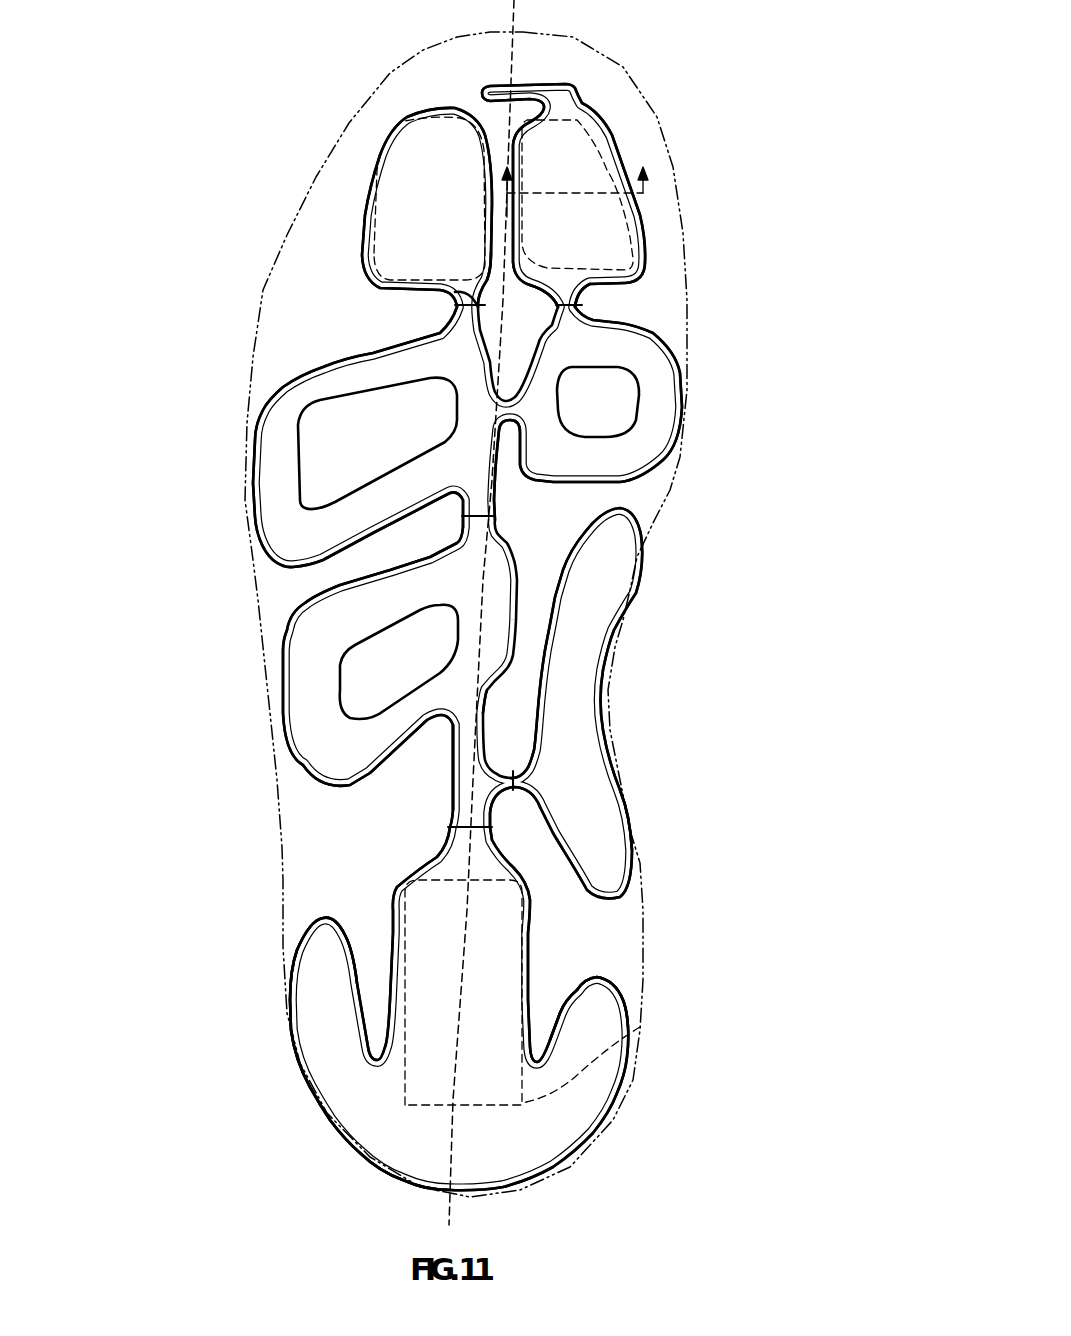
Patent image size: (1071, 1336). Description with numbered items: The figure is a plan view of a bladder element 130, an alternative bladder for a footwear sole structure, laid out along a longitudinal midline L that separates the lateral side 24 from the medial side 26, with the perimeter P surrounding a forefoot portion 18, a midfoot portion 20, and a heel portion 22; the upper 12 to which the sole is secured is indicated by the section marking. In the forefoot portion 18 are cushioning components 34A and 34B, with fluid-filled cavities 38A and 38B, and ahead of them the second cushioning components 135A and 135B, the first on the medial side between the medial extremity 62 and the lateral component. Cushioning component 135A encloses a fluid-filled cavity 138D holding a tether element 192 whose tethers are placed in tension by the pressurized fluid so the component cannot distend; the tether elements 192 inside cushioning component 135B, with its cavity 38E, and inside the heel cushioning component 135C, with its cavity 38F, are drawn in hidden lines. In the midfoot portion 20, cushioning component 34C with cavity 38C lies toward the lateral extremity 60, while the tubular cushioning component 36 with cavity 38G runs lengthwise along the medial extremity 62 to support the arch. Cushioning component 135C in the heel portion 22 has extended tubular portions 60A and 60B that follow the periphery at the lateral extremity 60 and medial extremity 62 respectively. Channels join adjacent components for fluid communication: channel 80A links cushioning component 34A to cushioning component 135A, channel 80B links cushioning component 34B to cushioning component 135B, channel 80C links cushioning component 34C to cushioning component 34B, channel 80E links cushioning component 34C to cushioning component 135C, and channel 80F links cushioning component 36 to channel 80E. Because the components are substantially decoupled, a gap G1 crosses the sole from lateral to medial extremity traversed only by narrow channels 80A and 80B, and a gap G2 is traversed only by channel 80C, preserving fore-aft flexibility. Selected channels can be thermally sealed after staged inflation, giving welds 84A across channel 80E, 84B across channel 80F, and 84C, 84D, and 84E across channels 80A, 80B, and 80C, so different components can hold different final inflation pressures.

The bladder element 130 is at (698, 40).
The longitudinal midline L is at (518, 20).
The upper 12 is at (572, 179).
The forefoot portion 18 is at (683, 168).
The midfoot portion 20 is at (617, 650).
The heel portion 22 is at (647, 967).
The lateral side 24 is at (253, 607).
The medial side 26 is at (677, 497).
The perimeter P is at (280, 863).
The gap G1 is at (608, 308).
The gap G2 is at (620, 497).
The cushioning component 34A is at (653, 352).
The cushioning component 34B is at (278, 418).
The cushioning component 34C is at (337, 638).
The tubular cushioning component 36 is at (620, 593).
The fluid-filled cavity 38A is at (653, 397).
The fluid-filled cavity 38B is at (278, 456).
The fluid-filled cavity 38C is at (320, 722).
The fluid-filled cavity 38E is at (360, 222).
The fluid-filled cavity 38F is at (553, 1128).
The fluid-filled cavity 38G is at (577, 713).
The lateral extremity 60 is at (278, 780).
The tubular portion 60A is at (310, 967).
The tubular portion 60B is at (610, 1008).
The medial extremity 62 is at (638, 847).
The channel 80A is at (572, 298).
The channel 80B is at (470, 298).
The channel 80C is at (502, 490).
The channel 80E is at (447, 770).
The channel 80F is at (500, 790).
The weld 84A is at (450, 823).
The weld 84B is at (522, 777).
The weld 84C is at (558, 312).
The weld 84D is at (472, 312).
The weld 84E is at (467, 512).
The cushioning component 135A is at (603, 130).
The cushioning component 135B is at (360, 238).
The cushioning component 135C is at (377, 1082).
The fluid-filled cavity 138D is at (650, 222).
The tether element 192 is at (373, 180).